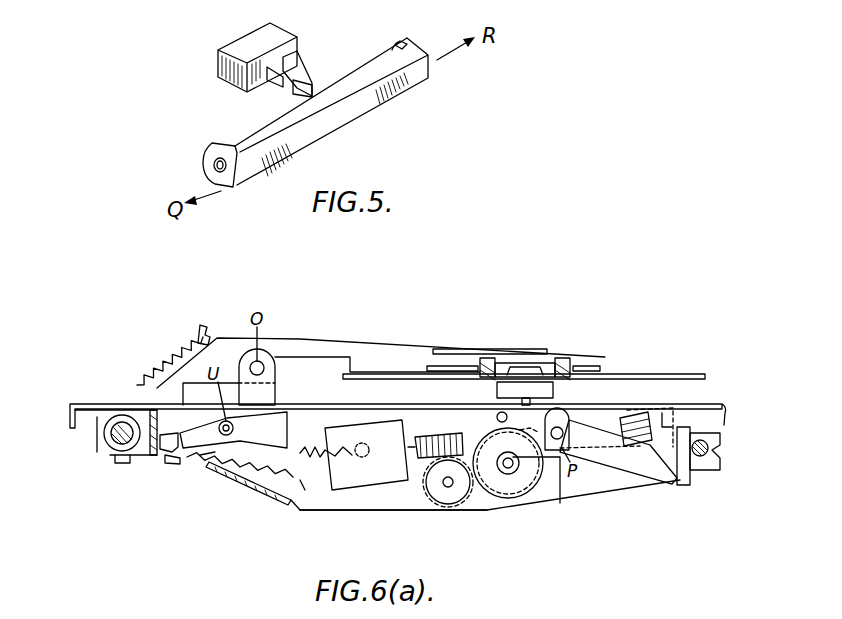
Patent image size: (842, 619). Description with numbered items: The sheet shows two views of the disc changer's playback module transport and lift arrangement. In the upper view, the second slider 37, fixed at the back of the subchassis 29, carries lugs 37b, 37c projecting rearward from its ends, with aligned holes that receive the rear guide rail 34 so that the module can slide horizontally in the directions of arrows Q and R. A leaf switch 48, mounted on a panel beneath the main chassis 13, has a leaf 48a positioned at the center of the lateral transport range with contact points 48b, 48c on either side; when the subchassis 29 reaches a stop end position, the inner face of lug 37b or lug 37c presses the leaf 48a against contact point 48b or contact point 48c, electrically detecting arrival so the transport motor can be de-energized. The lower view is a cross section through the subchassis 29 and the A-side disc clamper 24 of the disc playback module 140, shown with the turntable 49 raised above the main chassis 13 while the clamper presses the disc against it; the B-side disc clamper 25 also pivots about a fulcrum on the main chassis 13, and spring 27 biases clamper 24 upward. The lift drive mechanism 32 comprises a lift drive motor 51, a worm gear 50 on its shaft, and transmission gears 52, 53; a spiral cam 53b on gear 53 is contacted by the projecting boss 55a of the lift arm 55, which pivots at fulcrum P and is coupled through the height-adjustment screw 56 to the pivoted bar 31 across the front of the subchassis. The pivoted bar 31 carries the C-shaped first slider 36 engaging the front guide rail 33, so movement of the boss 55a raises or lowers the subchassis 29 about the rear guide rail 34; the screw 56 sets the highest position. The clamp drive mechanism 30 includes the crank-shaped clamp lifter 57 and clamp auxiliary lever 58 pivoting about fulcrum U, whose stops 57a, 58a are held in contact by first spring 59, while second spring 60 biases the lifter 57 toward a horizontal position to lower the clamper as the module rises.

The main chassis 13 is at (733, 404).
The disc clamper 24 is at (487, 349).
The disc clamper 25 is at (666, 373).
The spring 27 is at (167, 357).
The subchassis 29 is at (347, 503).
The clamp drive mechanism 30 is at (190, 485).
The pivoted bar 31 is at (672, 481).
The lift drive mechanism 32 is at (556, 486).
The guide rail 33 is at (713, 445).
The guide rail 34 is at (110, 437).
The first slider 36 is at (715, 467).
In FIG. 5, the second slider 37 is at (427, 67).
The second slider 37 is at (143, 452).
In FIG. 5, the lug 37b is at (216, 145).
In FIG. 5, the lug 37c is at (400, 40).
In FIG. 5, the leaf switch 48 is at (251, 37).
In FIG. 5, the leaf 48a is at (326, 81).
In FIG. 5, the contact point 48b is at (294, 101).
In FIG. 5, the contact point 48c is at (318, 63).
The turntable 49 is at (573, 391).
The worm gear 50 is at (437, 437).
The lift drive motor 51 is at (380, 470).
The transmission gear 52 is at (447, 497).
The transmission gear 53 is at (510, 503).
The spiral cam 53b is at (547, 497).
The lift arm 55 is at (637, 463).
The projecting boss 55a is at (497, 413).
The height-adjustment screw 56 is at (641, 413).
The clamp lifter 57 is at (167, 451).
The stop 57a is at (242, 478).
The clamp auxiliary lever 58 is at (290, 418).
The stop 58a is at (207, 467).
The first spring 59 is at (268, 484).
The second spring 60 is at (300, 480).
The disc playback module 140 is at (613, 524).